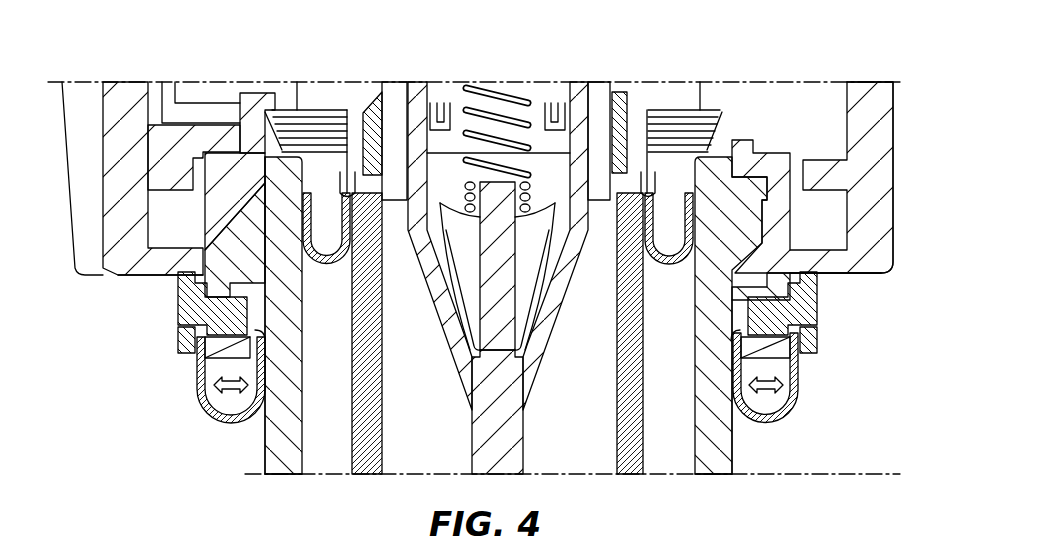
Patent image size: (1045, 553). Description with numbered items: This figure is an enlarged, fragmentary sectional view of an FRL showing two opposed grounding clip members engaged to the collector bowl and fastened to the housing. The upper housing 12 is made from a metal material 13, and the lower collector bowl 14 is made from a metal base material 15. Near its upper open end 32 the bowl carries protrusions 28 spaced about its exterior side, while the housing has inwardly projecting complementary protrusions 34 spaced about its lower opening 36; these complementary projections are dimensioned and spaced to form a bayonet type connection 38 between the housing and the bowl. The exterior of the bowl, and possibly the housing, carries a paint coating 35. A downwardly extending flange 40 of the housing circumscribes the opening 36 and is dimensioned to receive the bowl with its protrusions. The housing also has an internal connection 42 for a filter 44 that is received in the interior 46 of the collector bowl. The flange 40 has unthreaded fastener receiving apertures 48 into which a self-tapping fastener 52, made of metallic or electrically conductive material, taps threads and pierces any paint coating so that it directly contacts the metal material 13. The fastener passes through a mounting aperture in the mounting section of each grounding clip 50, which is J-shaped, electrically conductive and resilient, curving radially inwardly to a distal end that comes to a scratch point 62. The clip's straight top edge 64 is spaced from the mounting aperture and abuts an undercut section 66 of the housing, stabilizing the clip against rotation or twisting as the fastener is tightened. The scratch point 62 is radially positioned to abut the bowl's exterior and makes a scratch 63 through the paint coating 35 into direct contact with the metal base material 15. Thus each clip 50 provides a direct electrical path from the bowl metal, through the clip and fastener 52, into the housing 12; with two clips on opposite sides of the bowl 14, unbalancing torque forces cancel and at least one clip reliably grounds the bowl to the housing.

The upper housing 12 is at (893, 82).
The metal material 13 is at (882, 218).
The lower collector bowl 14 is at (300, 474).
The metal base material 15 is at (283, 452).
The protrusions 28 is at (250, 222).
The upper open end 32 is at (710, 170).
The complementary protrusions 34 is at (247, 268).
The paint coating 35 is at (265, 445).
The lower opening 36 is at (262, 357).
The bayonet type connection 38 is at (268, 262).
The downwardly extending flange 40 is at (207, 348).
The internal connection 42 is at (627, 100).
The filter 44 is at (625, 385).
The interior 46 is at (667, 443).
The fastener receiving apertures 48 is at (187, 333).
The grounding clip 50 is at (790, 410).
The self-tapping fastener 52 is at (183, 303).
The scratch point 62 is at (257, 337).
The scratch 63 is at (265, 476).
The top edge 64 is at (165, 274).
The undercut section 66 is at (130, 277).